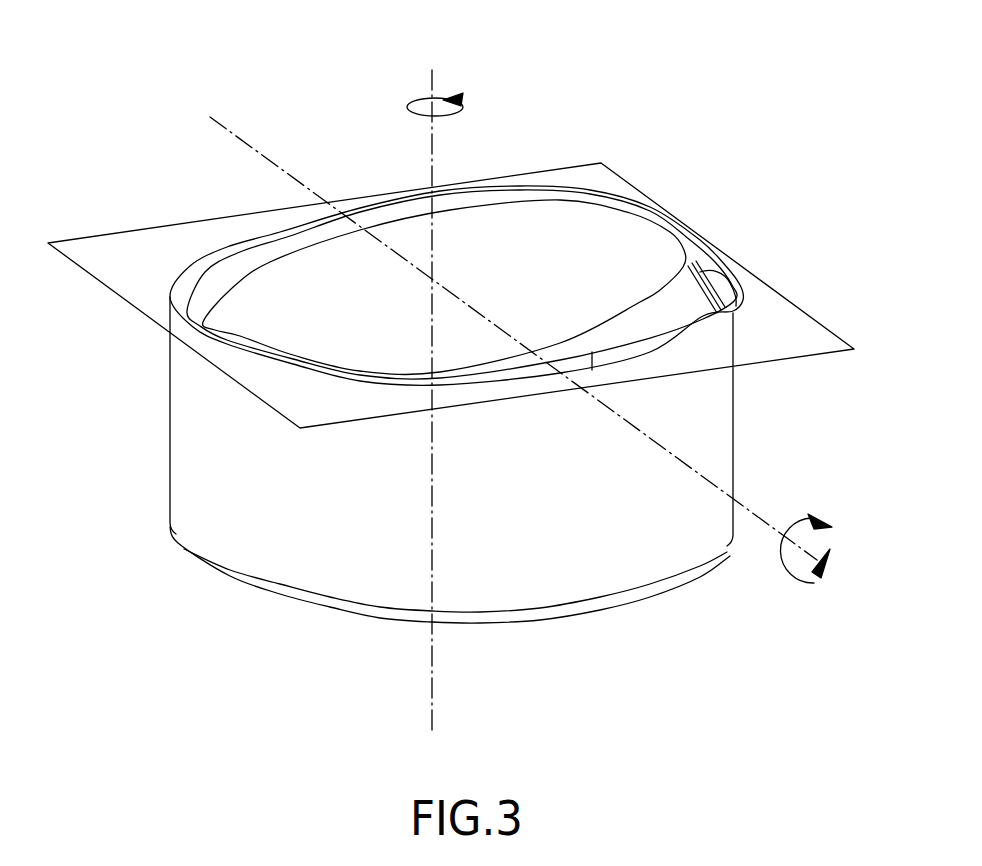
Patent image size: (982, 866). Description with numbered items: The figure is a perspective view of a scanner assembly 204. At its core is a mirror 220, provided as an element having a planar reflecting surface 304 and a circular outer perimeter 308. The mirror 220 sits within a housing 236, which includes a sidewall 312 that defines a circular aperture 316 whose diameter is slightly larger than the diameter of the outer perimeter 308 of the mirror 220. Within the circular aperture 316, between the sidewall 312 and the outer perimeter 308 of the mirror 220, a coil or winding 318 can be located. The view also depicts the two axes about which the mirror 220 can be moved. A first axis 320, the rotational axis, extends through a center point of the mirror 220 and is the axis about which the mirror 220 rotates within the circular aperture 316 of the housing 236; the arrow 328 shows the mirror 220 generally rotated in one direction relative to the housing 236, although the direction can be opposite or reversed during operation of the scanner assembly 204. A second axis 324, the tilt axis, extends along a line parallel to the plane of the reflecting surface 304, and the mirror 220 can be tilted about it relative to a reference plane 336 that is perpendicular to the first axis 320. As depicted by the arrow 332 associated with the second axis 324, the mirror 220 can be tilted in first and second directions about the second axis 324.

The scanner assembly 204 is at (527, 44).
The mirror 220 is at (633, 213).
The housing 236 is at (725, 407).
The planar reflecting surface 304 is at (548, 203).
The circular outer perimeter 308 is at (677, 209).
The sidewall 312 is at (727, 307).
The circular aperture 316 is at (703, 267).
The coil or winding 318 is at (733, 313).
The first axis 320 is at (434, 150).
The second axis 324 is at (752, 516).
The arrow 328 is at (407, 108).
The arrow 332 is at (793, 583).
The reference plane 336 is at (126, 246).